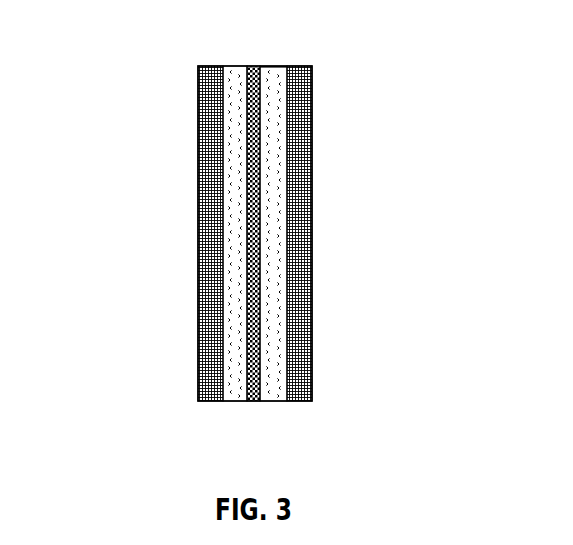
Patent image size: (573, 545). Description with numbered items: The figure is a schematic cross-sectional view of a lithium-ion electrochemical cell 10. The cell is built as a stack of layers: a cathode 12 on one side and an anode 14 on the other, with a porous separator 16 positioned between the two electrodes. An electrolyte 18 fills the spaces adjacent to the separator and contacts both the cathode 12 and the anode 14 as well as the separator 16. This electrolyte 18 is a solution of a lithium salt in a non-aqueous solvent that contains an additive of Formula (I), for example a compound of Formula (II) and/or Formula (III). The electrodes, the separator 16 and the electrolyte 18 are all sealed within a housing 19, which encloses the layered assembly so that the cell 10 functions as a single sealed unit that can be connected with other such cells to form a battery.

The lithium-ion electrochemical cell 10 is at (143, 86).
The cathode 12 is at (198, 135).
The anode 14 is at (312, 120).
The porous separator 16 is at (260, 387).
The electrolyte 18 is at (238, 220).
The housing 19 is at (275, 67).